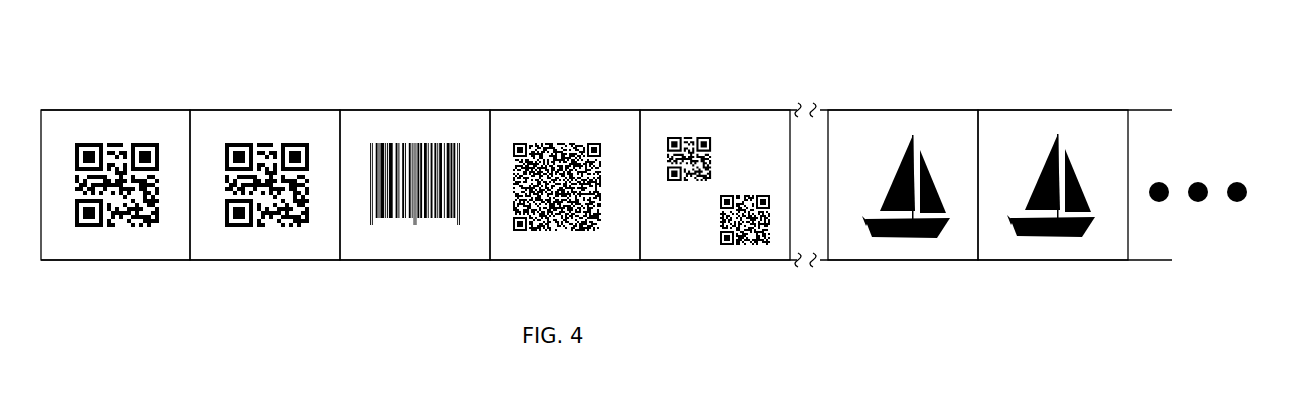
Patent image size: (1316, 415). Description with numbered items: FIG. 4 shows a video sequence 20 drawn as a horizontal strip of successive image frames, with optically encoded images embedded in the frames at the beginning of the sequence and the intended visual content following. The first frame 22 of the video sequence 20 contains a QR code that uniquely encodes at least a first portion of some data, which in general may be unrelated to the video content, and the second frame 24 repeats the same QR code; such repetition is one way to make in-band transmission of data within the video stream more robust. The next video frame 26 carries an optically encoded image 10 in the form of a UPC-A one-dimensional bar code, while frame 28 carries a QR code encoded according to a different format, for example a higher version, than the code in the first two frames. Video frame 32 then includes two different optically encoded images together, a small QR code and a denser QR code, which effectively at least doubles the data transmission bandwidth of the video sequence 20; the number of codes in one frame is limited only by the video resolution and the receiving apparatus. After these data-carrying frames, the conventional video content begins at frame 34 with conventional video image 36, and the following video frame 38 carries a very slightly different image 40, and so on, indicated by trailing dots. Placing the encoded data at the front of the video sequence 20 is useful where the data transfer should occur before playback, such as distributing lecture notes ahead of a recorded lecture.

The optically encoded image 10 is at (430, 137).
The video sequence 20 is at (1226, 67).
The first frame 22 is at (92, 108).
The second frame 24 is at (223, 108).
The video frame 26 is at (365, 108).
The frame 28 is at (518, 108).
The video frame 32 is at (663, 108).
The frame 34 is at (852, 108).
The conventional video image 36 is at (927, 137).
The video frame 38 is at (997, 108).
The image 40 is at (1068, 137).